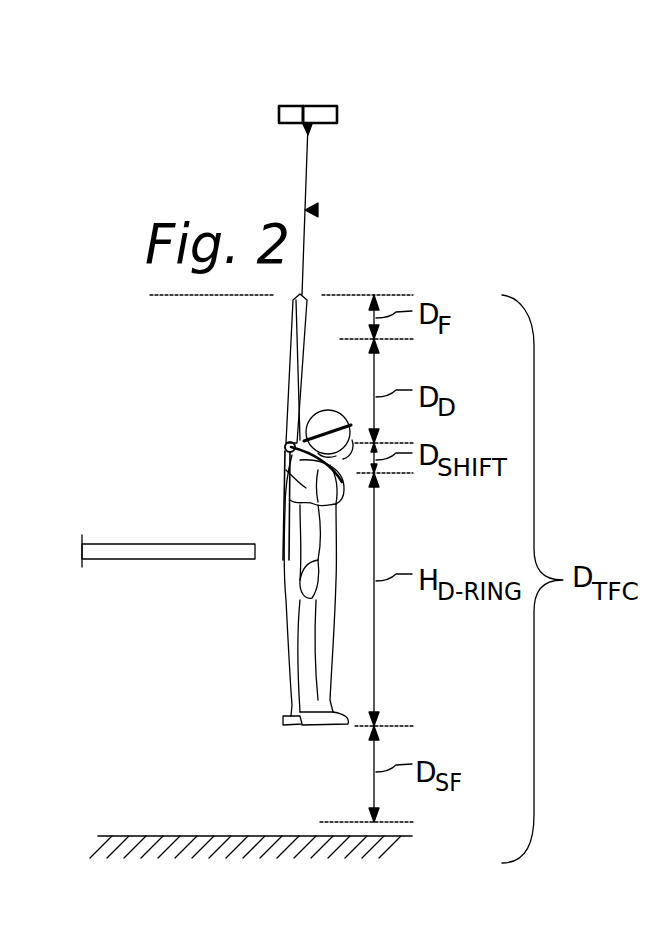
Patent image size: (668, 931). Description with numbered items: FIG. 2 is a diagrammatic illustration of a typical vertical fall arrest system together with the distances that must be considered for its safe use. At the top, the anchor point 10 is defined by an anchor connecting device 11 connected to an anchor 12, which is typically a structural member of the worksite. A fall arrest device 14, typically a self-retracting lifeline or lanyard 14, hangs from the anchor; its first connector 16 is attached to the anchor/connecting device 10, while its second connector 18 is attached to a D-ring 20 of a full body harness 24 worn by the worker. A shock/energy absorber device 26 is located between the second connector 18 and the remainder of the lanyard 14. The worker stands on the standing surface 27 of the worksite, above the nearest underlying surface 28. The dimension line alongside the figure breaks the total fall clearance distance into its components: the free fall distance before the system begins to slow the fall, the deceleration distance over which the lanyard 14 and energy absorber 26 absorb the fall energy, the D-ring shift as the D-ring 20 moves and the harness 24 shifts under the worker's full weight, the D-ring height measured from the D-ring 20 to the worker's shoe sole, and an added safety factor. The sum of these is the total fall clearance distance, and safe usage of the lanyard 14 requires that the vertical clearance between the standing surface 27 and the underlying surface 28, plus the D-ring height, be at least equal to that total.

The anchor point 10 is at (312, 126).
The anchor connecting device 11 is at (304, 104).
The anchor 12 is at (290, 112).
The fall arrest device 14 is at (318, 210).
The first connector 16 is at (309, 131).
The second connector 18 is at (285, 445).
The D-ring 20 is at (285, 455).
The full body harness 24 is at (290, 473).
The shock/energy absorber device 26 is at (290, 368).
The standing surface 27 is at (150, 544).
The nearest underlying surface 28 is at (213, 835).